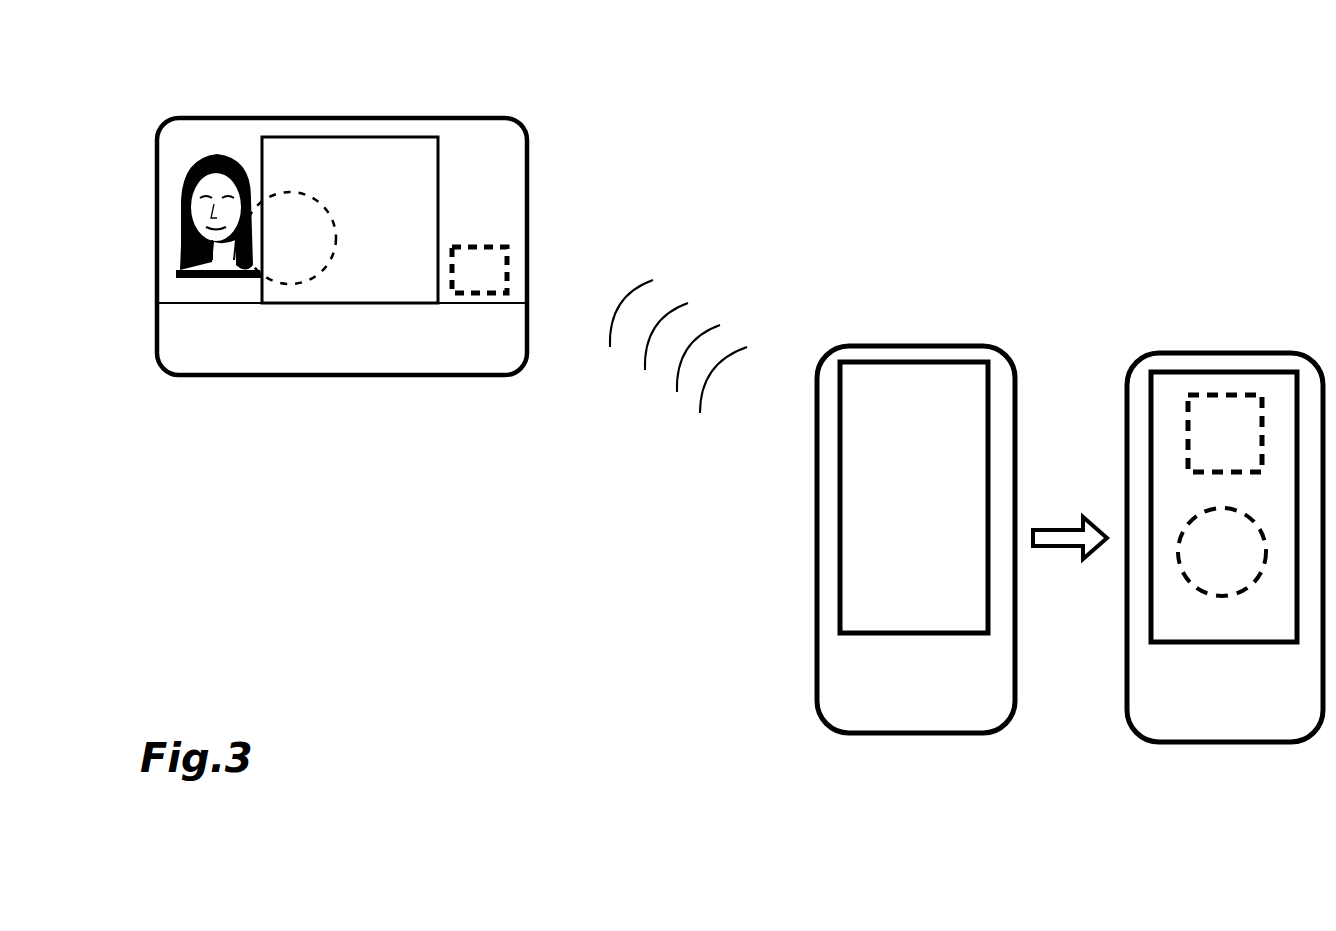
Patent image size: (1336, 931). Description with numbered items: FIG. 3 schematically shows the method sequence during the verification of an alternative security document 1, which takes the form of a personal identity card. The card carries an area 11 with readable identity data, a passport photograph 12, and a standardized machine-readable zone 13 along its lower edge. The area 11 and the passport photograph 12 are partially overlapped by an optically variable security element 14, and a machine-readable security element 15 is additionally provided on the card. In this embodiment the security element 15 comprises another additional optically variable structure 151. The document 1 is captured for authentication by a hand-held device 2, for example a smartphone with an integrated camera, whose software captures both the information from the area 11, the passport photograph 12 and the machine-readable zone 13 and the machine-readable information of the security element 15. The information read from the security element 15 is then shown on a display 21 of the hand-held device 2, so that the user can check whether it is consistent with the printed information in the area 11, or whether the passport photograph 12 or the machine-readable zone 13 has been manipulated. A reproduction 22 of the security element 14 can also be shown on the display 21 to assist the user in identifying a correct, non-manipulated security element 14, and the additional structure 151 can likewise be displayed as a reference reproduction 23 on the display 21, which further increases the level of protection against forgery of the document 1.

The security document 1 is at (566, 100).
The area with readable identity data 11 is at (345, 137).
The passport photograph 12 is at (217, 156).
The machine-readable zone 13 is at (157, 337).
The optically variable security element 14 is at (247, 280).
The machine-readable security element 15 is at (476, 295).
The additional optically variable structure 151 is at (507, 257).
The hand-held device 2 is at (890, 346).
The display 21 is at (980, 382).
The reproduction of the security element 22 is at (1190, 586).
The reference reproduction 23 is at (1188, 440).